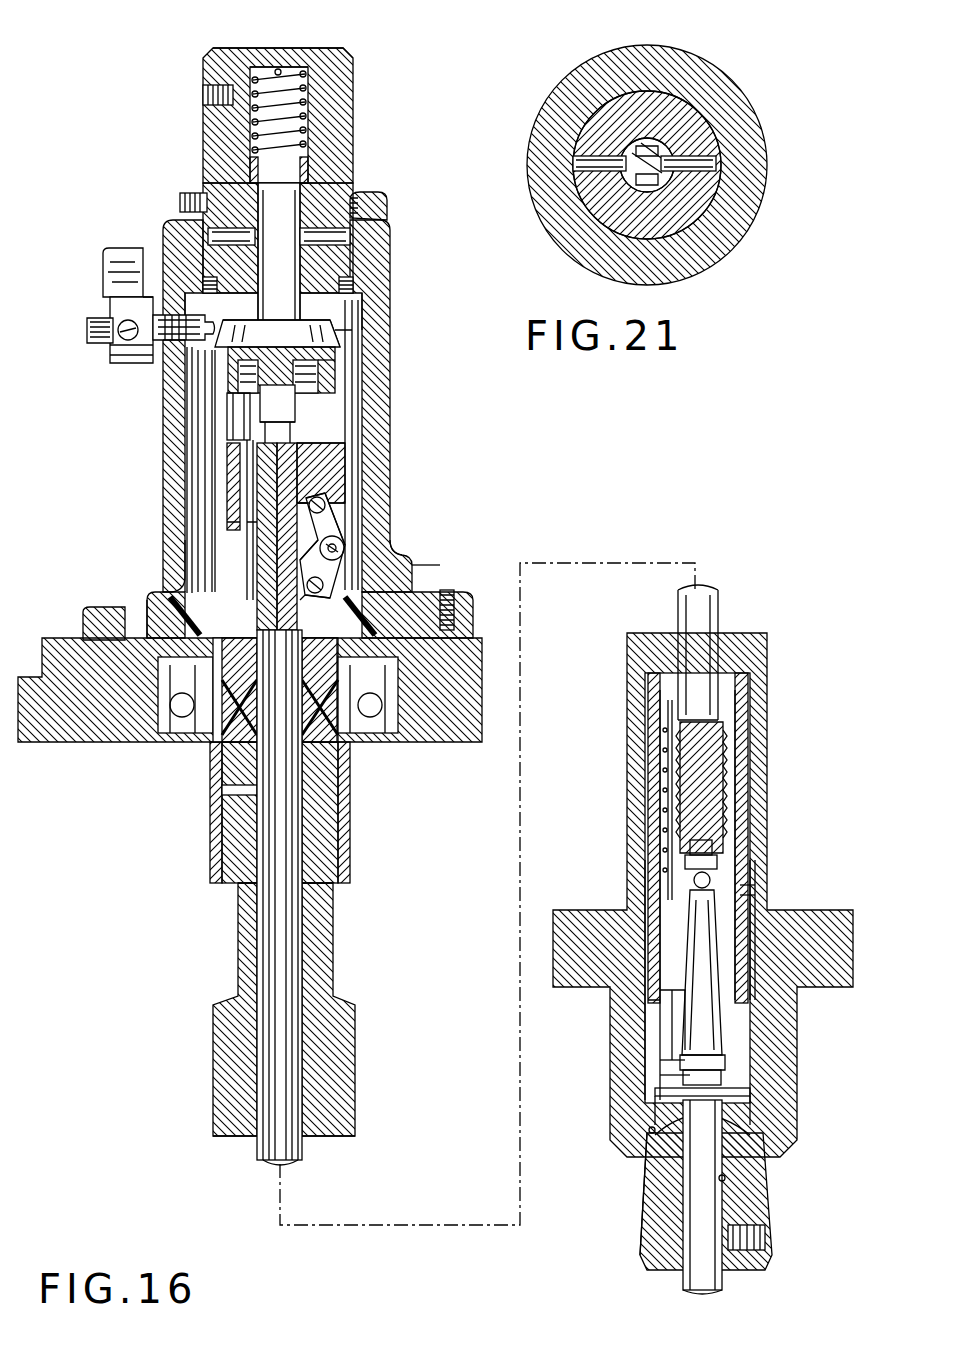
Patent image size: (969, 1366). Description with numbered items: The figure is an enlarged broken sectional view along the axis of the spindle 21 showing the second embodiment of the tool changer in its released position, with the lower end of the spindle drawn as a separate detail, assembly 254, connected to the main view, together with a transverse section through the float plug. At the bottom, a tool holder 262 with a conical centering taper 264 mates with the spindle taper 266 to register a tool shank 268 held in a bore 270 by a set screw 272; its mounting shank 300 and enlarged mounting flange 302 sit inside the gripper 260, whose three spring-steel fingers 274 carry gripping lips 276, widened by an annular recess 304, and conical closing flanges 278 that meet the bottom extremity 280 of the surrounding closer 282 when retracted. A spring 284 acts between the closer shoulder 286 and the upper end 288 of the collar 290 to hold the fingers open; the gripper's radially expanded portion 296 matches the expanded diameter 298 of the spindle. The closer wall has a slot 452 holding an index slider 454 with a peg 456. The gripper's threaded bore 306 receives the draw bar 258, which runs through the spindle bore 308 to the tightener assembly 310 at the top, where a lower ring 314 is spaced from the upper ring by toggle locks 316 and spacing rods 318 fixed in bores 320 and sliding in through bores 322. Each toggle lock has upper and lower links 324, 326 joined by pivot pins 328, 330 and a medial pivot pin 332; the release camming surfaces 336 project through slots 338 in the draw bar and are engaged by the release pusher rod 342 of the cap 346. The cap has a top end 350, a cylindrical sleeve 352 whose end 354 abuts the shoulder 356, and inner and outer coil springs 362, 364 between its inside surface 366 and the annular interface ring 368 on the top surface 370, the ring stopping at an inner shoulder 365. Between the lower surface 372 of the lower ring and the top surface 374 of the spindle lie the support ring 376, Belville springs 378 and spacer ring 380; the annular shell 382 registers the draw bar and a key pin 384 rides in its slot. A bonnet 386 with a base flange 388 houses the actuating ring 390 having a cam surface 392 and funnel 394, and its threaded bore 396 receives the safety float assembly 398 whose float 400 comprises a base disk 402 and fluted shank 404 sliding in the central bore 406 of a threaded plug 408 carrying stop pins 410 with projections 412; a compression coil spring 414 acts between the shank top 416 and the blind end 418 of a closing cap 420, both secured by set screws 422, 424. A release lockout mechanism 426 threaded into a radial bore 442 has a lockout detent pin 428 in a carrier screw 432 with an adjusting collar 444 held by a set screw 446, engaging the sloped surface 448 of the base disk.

In FIG. 16, the spindle 21 is at (348, 900).
In FIG. 16, the valve body 254 is at (543, 944).
In FIG. 16, the draw bar 258 is at (313, 1049).
In FIG. 16, the gripper 260 is at (648, 1051).
In FIG. 16, the tool holder 262 is at (628, 1239).
In FIG. 16, the conical centering taper 264 is at (645, 1190).
In FIG. 16, the spindle taper 266 is at (650, 1133).
In FIG. 16, the tool shank 268 is at (683, 1278).
In FIG. 16, the bore 270 is at (726, 1180).
In FIG. 16, the set screw 272 is at (765, 1238).
In FIG. 16, the fingers 274 is at (665, 1035).
In FIG. 16, the gripping lips 276 is at (655, 1092).
In FIG. 16, the closing flanges 278 is at (660, 1070).
In FIG. 16, the bottom extremity 280 is at (660, 1030).
In FIG. 16, the closer 282 is at (648, 940).
In FIG. 16, the spring 284 is at (660, 735).
In FIG. 16, the shoulder 286 is at (650, 705).
In FIG. 16, the upper end 288 is at (662, 782).
In FIG. 16, the collar 290 is at (665, 810).
In FIG. 16, the radially expanded portion 296 is at (632, 870).
In FIG. 16, the radially expanded diameter 298 is at (756, 870).
In FIG. 16, the mounting shank 300 is at (722, 1080).
In FIG. 16, the mounting flange 302 is at (728, 1065).
In FIG. 16, the annular recess 304 is at (722, 1010).
In FIG. 16, the threaded bore 306 is at (725, 760).
In FIG. 16, the spindle bore 308 is at (300, 930).
In FIG. 16, the tightener assembly 310 is at (352, 509).
In FIG. 16, the lower ring 314 is at (470, 593).
In FIG. 16, the toggle locks 316 is at (357, 553).
In FIG. 16, the spacing rods 318 is at (235, 524).
In FIG. 16, the bores 320 is at (147, 600).
In FIG. 16, the through bores 322 is at (245, 512).
In FIG. 16, the upper links 324 is at (350, 510).
In FIG. 16, the lower links 326 is at (345, 572).
In FIG. 16, the pivot pin 328 is at (350, 495).
In FIG. 16, the pivot pin 330 is at (325, 588).
In FIG. 16, the medial pivot pin 332 is at (410, 549).
In FIG. 16, the release camming surfaces 336 is at (345, 530).
In FIG. 16, the slots 338 is at (345, 482).
In FIG. 16, the release pusher rod 342 is at (258, 440).
In FIG. 16, the cap 346 is at (262, 395).
In FIG. 16, the top end 350 is at (342, 340).
In FIG. 16, the cylindrical sleeve 352 is at (345, 430).
In FIG. 16, the end 354 is at (225, 495).
In FIG. 16, the shoulder 356 is at (225, 475).
In FIG. 16, the inner coil spring 362 is at (320, 382).
In FIG. 16, the outer coil spring 364 is at (336, 360).
In FIG. 16, the inner shoulder 365 is at (335, 394).
In FIG. 16, the inside surface 366 is at (305, 345).
In FIG. 16, the annular interface ring 368 is at (298, 405).
In FIG. 16, the top surface 370 is at (345, 462).
In FIG. 16, the lower surface 372 is at (470, 625).
In FIG. 16, the top surface 374 is at (335, 830).
In FIG. 16, the support ring 376 is at (335, 772).
In FIG. 16, the Belville springs 378 is at (325, 730).
In FIG. 16, the spacer ring 380 is at (215, 700).
In FIG. 16, the annular shell 382 is at (310, 860).
In FIG. 16, the key pin 384 is at (222, 790).
In FIG. 16, the bonnet 386 is at (390, 232).
In FIG. 21, the bonnet 386 is at (747, 235).
In FIG. 16, the base flange 388 is at (83, 628).
In FIG. 16, the actuating ring 390 is at (147, 610).
In FIG. 16, the cam surface 392 is at (195, 570).
In FIG. 16, the funnel 394 is at (175, 600).
In FIG. 16, the threaded bore 396 is at (368, 160).
In FIG. 16, the safety float assembly 398 is at (364, 70).
In FIG. 16, the float 400 is at (341, 306).
In FIG. 16, the base disk 402 is at (360, 300).
In FIG. 16, the fluted shank 404 is at (348, 260).
In FIG. 21, the fluted shank 404 is at (600, 210).
In FIG. 16, the central bore 406 is at (300, 104).
In FIG. 16, the threaded plug 408 is at (393, 190).
In FIG. 21, the threaded plug 408 is at (620, 245).
In FIG. 16, the stop pins 410 is at (215, 232).
In FIG. 21, the stop pins 410 is at (595, 152).
In FIG. 16, the projections 412 is at (268, 215).
In FIG. 16, the compression coil spring 414 is at (262, 67).
In FIG. 16, the top 416 is at (305, 150).
In FIG. 16, the blind end 418 is at (282, 70).
In FIG. 16, the closing cap 420 is at (350, 52).
In FIG. 16, the set screw 422 is at (203, 95).
In FIG. 16, the set screw 424 is at (190, 193).
In FIG. 16, the release lockout mechanism 426 is at (85, 378).
In FIG. 16, the lockout detent pin 428 is at (180, 342).
In FIG. 16, the carrier screw 432 is at (125, 297).
In FIG. 16, the threaded radial bore 442 is at (110, 347).
In FIG. 16, the adjusting collar 444 is at (150, 300).
In FIG. 16, the set screw 446 is at (118, 328).
In FIG. 16, the sloped surface 448 is at (345, 322).
In FIG. 16, the slot 452 is at (740, 887).
In FIG. 16, the index slider 454 is at (735, 900).
In FIG. 16, the peg 456 is at (665, 840).